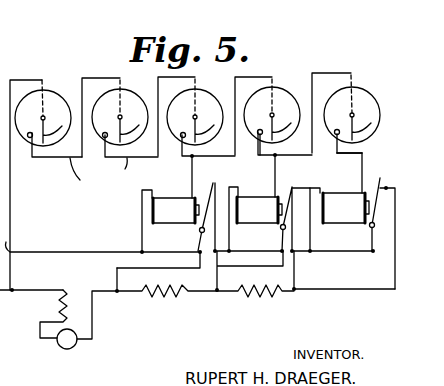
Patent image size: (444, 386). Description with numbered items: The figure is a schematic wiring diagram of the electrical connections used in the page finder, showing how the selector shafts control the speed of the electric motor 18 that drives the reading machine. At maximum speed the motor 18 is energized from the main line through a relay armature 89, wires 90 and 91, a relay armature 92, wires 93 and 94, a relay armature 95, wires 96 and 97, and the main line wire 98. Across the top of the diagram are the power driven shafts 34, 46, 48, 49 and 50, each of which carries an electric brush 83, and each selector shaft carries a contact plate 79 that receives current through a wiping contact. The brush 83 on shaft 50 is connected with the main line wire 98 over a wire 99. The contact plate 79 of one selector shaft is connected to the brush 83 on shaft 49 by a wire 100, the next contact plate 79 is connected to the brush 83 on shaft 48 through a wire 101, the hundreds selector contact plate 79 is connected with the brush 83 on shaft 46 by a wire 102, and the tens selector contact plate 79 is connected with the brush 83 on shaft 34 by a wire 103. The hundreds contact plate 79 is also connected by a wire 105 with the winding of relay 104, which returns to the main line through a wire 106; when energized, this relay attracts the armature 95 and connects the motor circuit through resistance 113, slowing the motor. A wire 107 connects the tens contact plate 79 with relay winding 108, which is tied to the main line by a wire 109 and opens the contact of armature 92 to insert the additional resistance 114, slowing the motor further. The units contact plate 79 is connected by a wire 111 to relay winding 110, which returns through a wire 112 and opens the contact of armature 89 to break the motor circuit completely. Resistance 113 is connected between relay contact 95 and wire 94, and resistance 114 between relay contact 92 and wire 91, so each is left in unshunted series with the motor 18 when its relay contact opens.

The electric motor 18 is at (62, 348).
The power driven shaft 34 is at (354, 113).
The power driven shaft 46 is at (273, 113).
The power driven shaft 48 is at (196, 115).
The power driven shaft 49 is at (121, 115).
The power driven shaft 50 is at (45, 115).
The contact plate 79 is at (30, 137).
The electric brush 83 is at (48, 130).
The relay armature 89 is at (395, 187).
The wire 90 is at (395, 272).
The wire 91 is at (297, 273).
The relay armature 92 is at (312, 188).
The wire 93 is at (233, 270).
The wire 94 is at (220, 187).
The relay armature 95 is at (215, 183).
The wire 96 is at (117, 268).
The wire 97 is at (93, 321).
The main line wire 98 is at (33, 293).
The wire 99 is at (32, 79).
The wire 100 is at (87, 179).
The wire 101 is at (142, 174).
The wire 102 is at (262, 75).
The wire 103 is at (333, 74).
The relay 104 is at (163, 217).
The wire 105 is at (228, 168).
The wire 106 is at (142, 232).
The wire 107 is at (275, 172).
The relay winding 108 is at (248, 216).
The wire 109 is at (215, 253).
The relay winding 110 is at (340, 216).
The wire 111 is at (362, 153).
The wire 112 is at (313, 251).
The resistance 113 is at (150, 297).
The resistance 114 is at (284, 297).